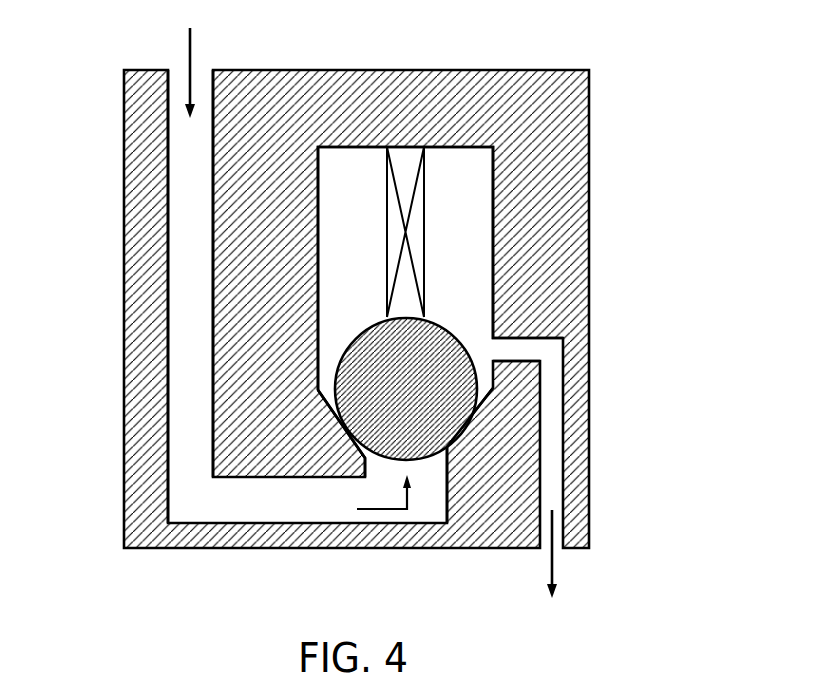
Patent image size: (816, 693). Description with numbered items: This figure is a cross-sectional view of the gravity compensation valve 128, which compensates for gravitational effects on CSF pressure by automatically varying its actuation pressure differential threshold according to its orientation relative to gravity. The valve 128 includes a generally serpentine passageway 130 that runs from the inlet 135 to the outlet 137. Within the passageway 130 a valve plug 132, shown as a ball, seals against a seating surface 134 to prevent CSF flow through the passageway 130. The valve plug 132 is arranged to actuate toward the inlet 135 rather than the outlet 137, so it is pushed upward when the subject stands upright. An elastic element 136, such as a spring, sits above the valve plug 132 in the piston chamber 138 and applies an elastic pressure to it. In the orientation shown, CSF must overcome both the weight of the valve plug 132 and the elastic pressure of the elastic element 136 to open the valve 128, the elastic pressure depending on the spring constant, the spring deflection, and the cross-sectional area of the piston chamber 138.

The gravity compensation valve 128 is at (612, 114).
The passageway 130 is at (196, 224).
The valve plug 132 is at (370, 456).
The seating surface 134 is at (456, 428).
The inlet 135 is at (204, 70).
The elastic element 136 is at (386, 172).
The outlet 137 is at (556, 551).
The piston chamber 138 is at (455, 190).